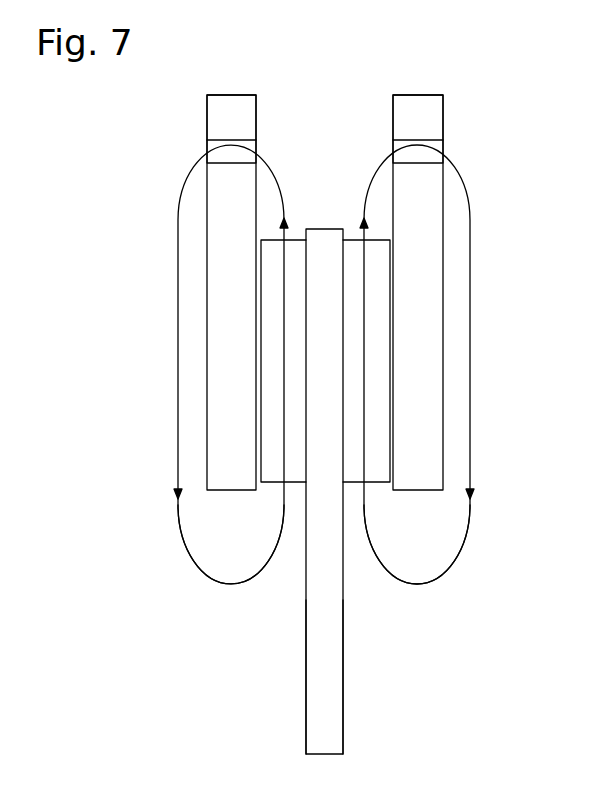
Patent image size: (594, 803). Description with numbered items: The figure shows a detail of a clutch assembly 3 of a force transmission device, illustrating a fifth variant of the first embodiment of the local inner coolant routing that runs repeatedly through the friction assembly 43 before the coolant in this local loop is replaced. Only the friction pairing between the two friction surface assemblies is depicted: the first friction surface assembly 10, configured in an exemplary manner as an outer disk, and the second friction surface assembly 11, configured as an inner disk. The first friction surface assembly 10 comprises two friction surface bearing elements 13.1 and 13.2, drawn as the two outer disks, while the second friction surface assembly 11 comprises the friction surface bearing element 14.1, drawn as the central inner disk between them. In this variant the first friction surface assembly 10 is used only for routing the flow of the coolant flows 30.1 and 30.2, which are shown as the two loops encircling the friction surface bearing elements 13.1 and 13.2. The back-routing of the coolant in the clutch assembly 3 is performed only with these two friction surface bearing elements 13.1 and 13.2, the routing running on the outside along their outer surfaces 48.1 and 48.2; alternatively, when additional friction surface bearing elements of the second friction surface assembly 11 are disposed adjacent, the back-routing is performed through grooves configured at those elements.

The clutch assembly 3 is at (325, 279).
The friction assembly 43 is at (308, 142).
The first friction surface assembly 10 is at (420, 88).
The second friction surface assembly 11 is at (345, 720).
The friction surface bearing element 13.1 is at (227, 118).
The friction surface bearing element 13.2 is at (425, 118).
The friction surface bearing element 14.1 is at (327, 680).
The coolant flow 30.1 is at (205, 573).
The coolant flow 30.2 is at (443, 574).
The outer surface 48.1 is at (205, 321).
The outer surface 48.2 is at (445, 321).